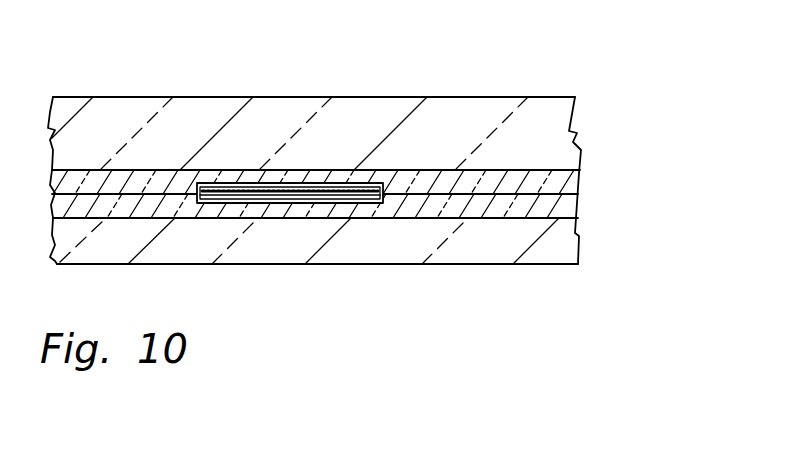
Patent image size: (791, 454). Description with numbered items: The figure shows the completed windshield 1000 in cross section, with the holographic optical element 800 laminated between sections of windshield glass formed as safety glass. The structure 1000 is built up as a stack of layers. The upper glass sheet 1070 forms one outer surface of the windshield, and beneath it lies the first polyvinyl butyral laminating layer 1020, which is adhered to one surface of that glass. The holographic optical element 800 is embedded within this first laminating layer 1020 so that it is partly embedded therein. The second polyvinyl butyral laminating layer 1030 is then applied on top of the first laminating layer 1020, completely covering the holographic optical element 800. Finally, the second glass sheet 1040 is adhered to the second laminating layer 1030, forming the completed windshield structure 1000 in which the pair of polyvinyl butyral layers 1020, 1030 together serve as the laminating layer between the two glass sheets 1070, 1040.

The windshield 1000 is at (527, 88).
The holographic optical element 800 is at (313, 183).
The outer layer 1070 is at (572, 143).
The first polyvinyl butyral laminating layer 1020 is at (578, 183).
The second polyvinyl butyral laminating layer 1030 is at (578, 204).
The second glass sheet 1040 is at (578, 252).